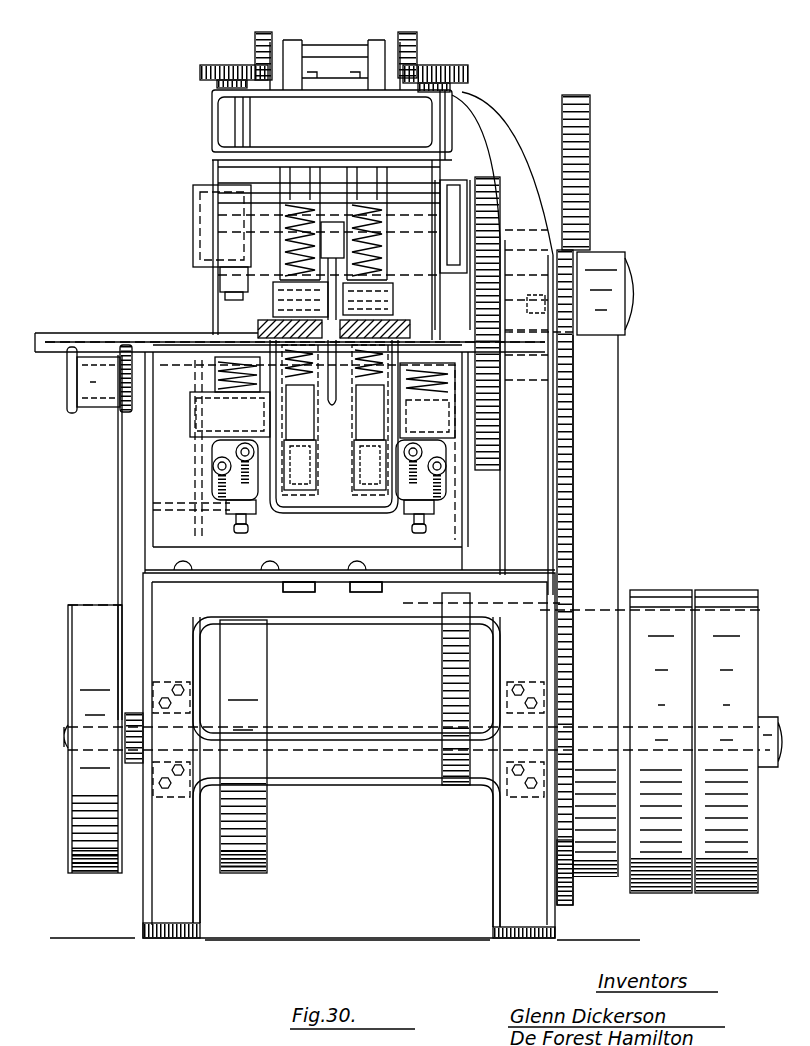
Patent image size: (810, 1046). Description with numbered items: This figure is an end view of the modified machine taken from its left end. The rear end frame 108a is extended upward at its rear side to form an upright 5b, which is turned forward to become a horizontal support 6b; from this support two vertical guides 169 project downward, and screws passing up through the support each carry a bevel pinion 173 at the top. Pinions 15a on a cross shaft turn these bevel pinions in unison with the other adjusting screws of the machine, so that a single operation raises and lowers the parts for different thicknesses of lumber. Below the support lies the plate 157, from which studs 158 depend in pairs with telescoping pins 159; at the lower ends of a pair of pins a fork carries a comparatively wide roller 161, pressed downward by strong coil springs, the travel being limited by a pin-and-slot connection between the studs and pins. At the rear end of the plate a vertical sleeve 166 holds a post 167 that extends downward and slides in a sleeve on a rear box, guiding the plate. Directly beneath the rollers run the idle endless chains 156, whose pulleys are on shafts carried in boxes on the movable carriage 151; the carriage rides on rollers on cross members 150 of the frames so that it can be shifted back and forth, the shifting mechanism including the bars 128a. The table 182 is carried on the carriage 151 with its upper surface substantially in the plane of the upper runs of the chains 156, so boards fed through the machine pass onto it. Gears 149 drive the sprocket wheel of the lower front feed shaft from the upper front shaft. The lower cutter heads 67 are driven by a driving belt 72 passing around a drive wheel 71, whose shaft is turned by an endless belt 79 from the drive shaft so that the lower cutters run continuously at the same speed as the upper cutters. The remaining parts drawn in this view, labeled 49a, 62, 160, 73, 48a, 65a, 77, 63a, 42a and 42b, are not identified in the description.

The pinions 15a is at (352, 30).
The bevel pinion 173 is at (218, 64).
The studs 158 is at (300, 160).
The plate 157 is at (333, 182).
The horizontal support 6b is at (262, 122).
The vertical guides 169 is at (232, 170).
The upright 5b is at (500, 155).
The upper gear 49a is at (590, 155).
The vertical sleeve 166 is at (500, 210).
The bearing block 62 is at (632, 298).
The post 167 is at (567, 332).
The table 182 is at (47, 333).
The pins 159 is at (273, 300).
The hatched block 160 is at (280, 275).
The roller 161 is at (263, 390).
The bracket 73 is at (67, 387).
The gears 149 is at (513, 388).
The chain gear 48a is at (570, 427).
The side frame 65a is at (605, 492).
The movable carriage 151 is at (185, 470).
The cutter heads 67 is at (332, 402).
The endless chains 156 is at (370, 473).
The driving belt 72 is at (92, 565).
The cross members 150 is at (348, 603).
The bars 128a is at (293, 592).
The end frame 108a is at (368, 768).
The hub 77 is at (65, 740).
The drive wheel 71 is at (70, 817).
The endless belt 79 is at (248, 852).
The lower chain gear 63a is at (567, 860).
The right wheel 42a is at (657, 893).
The right wheel 42b is at (715, 893).